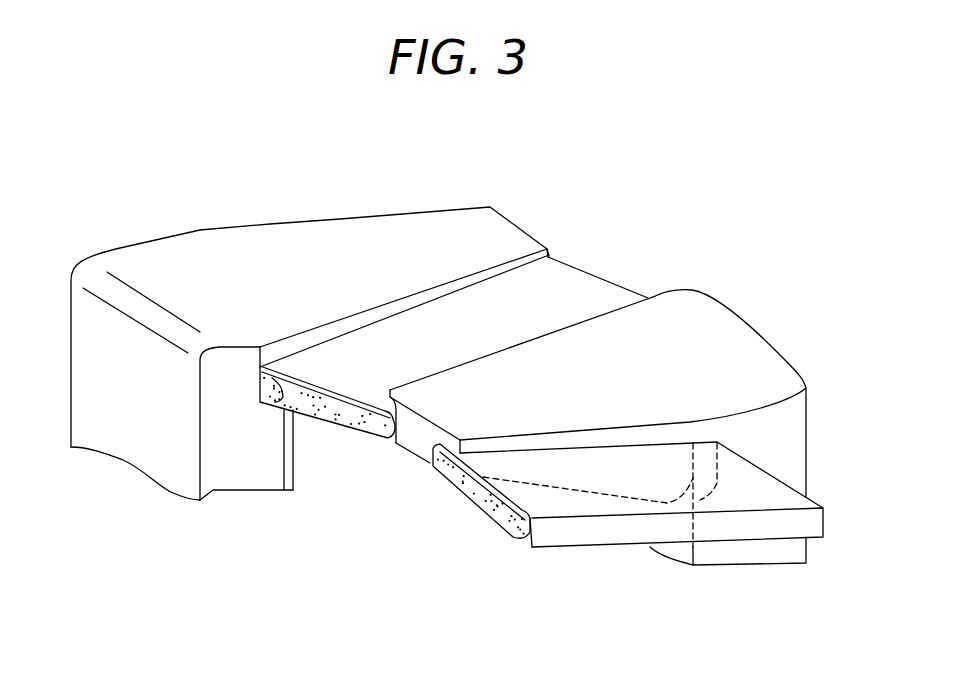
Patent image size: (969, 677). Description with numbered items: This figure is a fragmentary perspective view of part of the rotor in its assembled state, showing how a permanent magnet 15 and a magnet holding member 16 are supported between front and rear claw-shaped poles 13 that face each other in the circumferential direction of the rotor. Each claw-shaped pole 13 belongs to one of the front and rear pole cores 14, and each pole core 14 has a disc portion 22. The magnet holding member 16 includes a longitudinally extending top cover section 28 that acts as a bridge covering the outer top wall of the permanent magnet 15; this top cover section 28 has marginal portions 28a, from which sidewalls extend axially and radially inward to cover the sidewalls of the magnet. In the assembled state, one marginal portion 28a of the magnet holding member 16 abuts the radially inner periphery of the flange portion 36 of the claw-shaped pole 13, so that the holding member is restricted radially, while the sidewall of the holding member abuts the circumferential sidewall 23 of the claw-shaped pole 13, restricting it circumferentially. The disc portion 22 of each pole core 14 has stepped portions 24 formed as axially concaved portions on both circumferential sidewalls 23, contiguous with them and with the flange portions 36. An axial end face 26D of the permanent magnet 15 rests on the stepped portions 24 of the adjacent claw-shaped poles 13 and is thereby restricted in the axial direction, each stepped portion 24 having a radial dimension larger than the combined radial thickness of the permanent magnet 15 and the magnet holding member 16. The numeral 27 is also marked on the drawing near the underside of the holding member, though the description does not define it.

The claw-shaped pole 13 is at (337, 247).
The pole core 14 is at (121, 228).
The permanent magnet 15 is at (337, 413).
The magnet holding member 16 is at (562, 262).
The disc portion 22 is at (245, 473).
The circumferential sidewall 23 is at (392, 420).
The stepped portion 24 is at (720, 443).
The axial end face 26D is at (517, 527).
The bottom edge of plate 27 is at (623, 530).
The top cover section 28 is at (568, 293).
The marginal portion 28a is at (500, 460).
The flange portion 36 is at (366, 216).